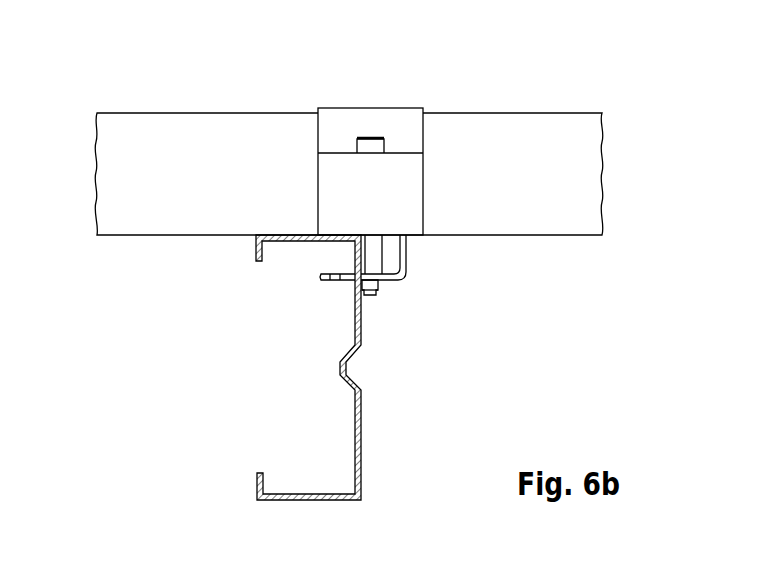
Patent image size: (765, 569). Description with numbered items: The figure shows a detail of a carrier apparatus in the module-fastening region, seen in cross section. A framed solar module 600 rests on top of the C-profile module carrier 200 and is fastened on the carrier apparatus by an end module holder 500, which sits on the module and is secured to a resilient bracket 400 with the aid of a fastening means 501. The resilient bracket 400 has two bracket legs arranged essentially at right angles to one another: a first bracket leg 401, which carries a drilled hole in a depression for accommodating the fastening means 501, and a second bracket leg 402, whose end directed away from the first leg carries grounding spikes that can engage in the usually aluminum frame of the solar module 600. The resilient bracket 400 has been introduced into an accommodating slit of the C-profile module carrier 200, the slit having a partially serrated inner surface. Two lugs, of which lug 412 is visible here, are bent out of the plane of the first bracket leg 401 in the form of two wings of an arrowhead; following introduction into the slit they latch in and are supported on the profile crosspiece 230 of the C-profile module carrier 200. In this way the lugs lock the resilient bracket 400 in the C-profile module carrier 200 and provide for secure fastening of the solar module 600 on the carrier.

The C-profile module carrier 200 is at (356, 370).
The profile crosspiece 230 is at (362, 425).
The resilient bracket 400 is at (432, 279).
The first bracket leg 401 is at (320, 277).
The second bracket leg 402 is at (407, 258).
The lug 412 is at (340, 281).
The end module holder 500 is at (376, 114).
The fastening means 501 is at (373, 296).
The framed solar module 600 is at (510, 124).